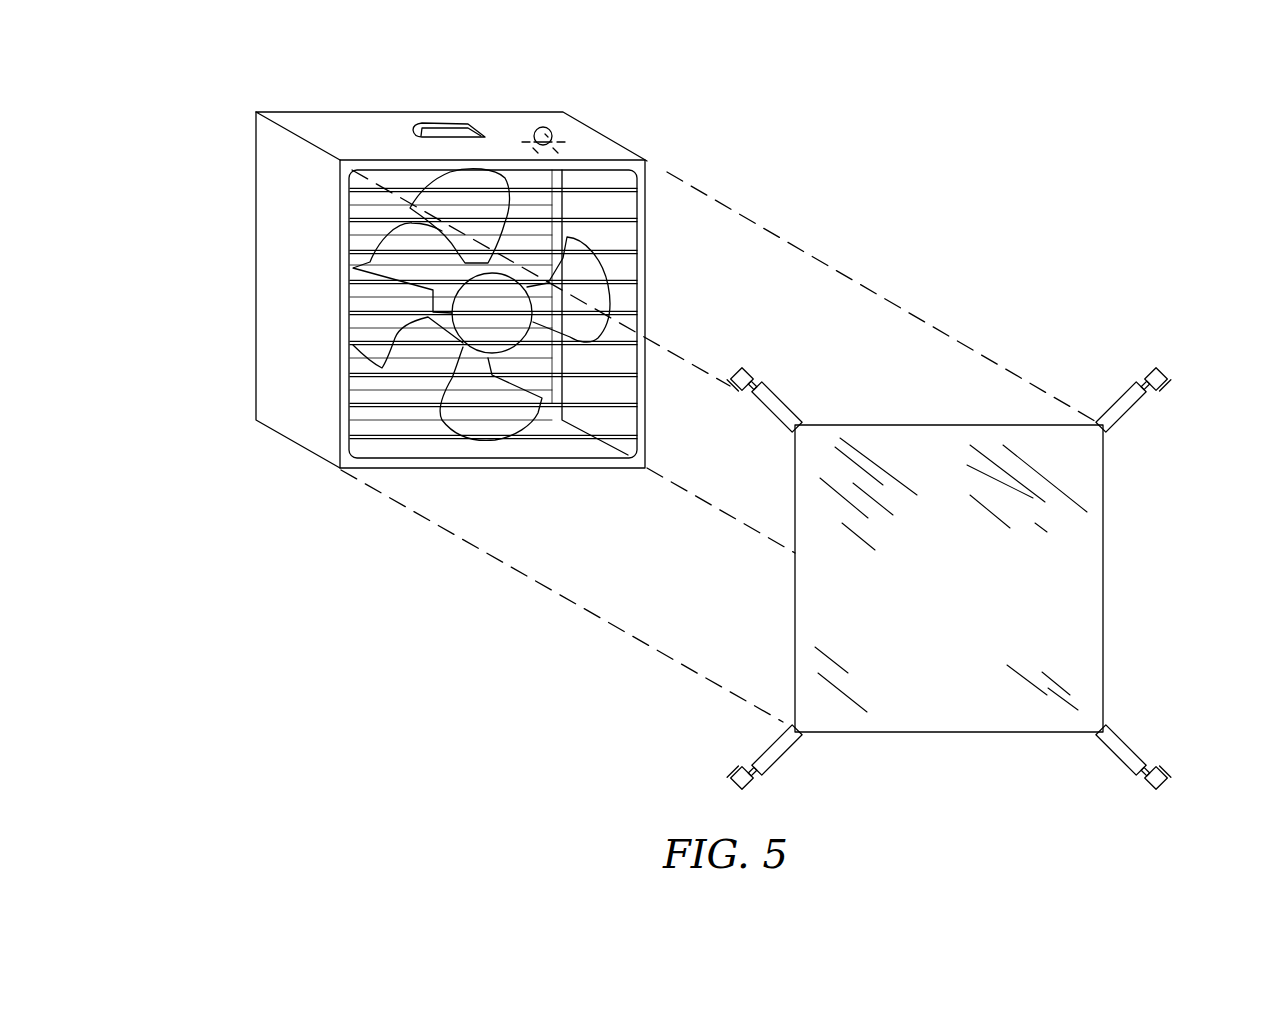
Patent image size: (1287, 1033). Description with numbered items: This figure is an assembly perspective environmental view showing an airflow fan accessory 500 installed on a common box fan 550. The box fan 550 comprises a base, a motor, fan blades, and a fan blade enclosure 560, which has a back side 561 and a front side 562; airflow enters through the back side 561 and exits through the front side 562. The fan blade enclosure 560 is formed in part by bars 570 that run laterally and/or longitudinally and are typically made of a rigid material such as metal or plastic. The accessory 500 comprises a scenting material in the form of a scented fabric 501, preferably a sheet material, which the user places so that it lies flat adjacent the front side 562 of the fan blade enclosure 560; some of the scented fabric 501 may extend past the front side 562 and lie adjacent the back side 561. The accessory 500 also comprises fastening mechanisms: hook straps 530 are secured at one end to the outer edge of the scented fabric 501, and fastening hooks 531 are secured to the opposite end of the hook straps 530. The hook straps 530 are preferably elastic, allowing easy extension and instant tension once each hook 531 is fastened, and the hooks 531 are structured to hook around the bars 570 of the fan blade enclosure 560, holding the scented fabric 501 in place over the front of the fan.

The airflow fan accessory 500 is at (951, 560).
The scented fabric 501 is at (952, 685).
The hook strap 530 is at (787, 413).
The fastening hook 531 is at (755, 375).
The box fan 550 is at (400, 98).
The fan blade enclosure 560 is at (282, 384).
The back side 561 is at (256, 222).
The front side 562 is at (458, 465).
The bars 570 is at (372, 313).